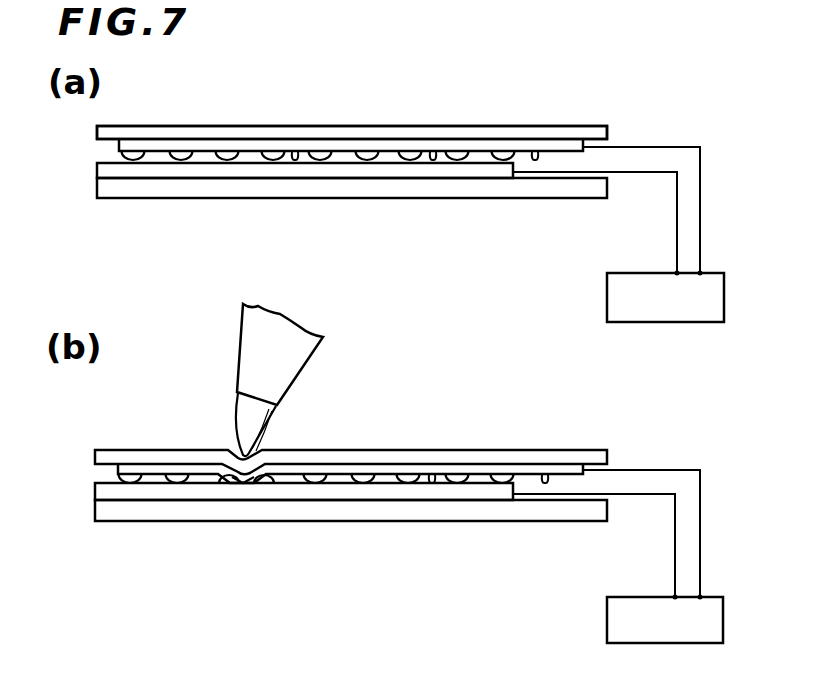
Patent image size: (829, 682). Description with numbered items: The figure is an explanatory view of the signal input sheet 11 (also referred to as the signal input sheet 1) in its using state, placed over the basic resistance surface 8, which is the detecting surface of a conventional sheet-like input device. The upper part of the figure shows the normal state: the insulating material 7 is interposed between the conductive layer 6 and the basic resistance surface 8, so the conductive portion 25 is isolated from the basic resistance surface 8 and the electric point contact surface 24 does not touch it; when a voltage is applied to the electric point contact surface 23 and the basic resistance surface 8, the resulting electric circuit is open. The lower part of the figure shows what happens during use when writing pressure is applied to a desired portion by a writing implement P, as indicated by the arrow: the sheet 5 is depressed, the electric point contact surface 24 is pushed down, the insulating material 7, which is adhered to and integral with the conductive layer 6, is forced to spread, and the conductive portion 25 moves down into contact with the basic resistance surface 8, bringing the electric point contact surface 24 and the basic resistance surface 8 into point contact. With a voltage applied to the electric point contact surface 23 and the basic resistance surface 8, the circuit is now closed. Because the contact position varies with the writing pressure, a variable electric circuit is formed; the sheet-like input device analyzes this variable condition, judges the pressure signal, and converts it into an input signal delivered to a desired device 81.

The signal input sheet 11 is at (137, 124).
The signal input sheet 1 is at (137, 447).
The sheet 5 is at (198, 136).
The conductive layer 6 is at (250, 149).
The insulating material 7 is at (367, 150).
The conductive portion 25 is at (297, 153).
The electric point contact surface 24 is at (433, 152).
The electric point contact surface 23 is at (535, 152).
The basic resistance surface 8 is at (368, 179).
The desired device 81 is at (617, 296).
The writing implement P is at (295, 363).